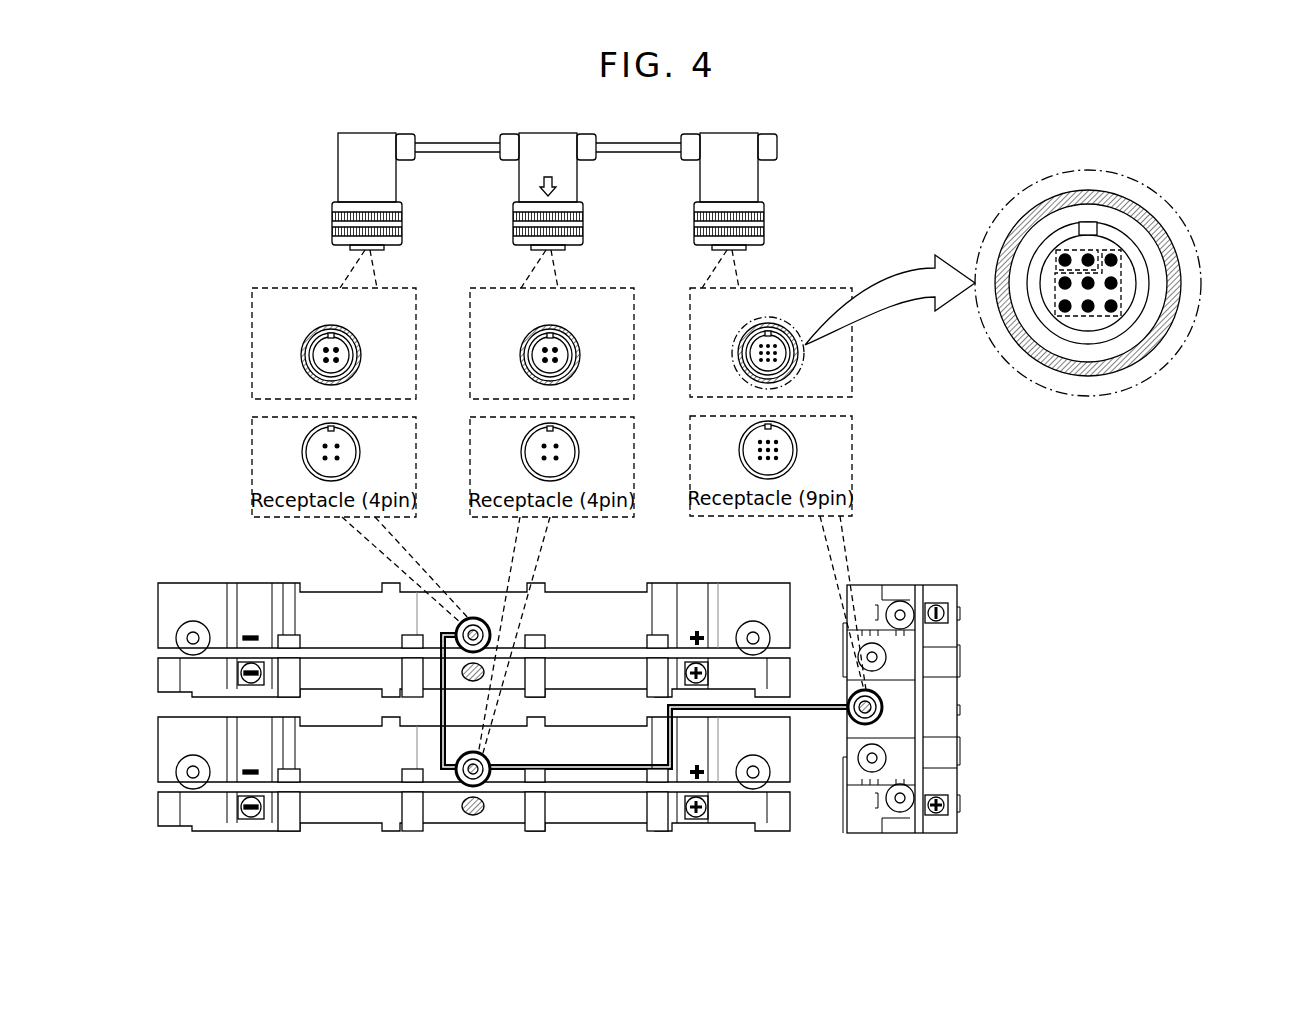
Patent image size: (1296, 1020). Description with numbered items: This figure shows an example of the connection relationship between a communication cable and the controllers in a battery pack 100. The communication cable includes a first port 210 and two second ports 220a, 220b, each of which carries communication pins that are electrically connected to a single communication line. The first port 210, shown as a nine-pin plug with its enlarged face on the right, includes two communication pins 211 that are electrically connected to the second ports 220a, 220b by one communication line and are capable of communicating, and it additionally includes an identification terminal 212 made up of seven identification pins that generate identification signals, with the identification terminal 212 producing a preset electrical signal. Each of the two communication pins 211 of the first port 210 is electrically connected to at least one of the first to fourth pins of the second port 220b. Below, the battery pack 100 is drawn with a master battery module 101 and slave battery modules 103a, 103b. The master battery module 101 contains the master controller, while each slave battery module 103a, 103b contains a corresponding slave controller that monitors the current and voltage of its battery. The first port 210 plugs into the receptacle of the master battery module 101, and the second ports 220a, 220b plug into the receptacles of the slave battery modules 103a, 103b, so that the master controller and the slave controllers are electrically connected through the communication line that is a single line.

The battery pack 100 is at (912, 98).
The master battery module 101 is at (930, 583).
The slave battery module 103a is at (200, 580).
The slave battery module 103b is at (228, 832).
The first port 210 is at (694, 209).
The communication pins 211 is at (1077, 250).
The identification terminal 212 is at (1122, 284).
The second port 220a is at (514, 209).
The second port 220b is at (332, 209).